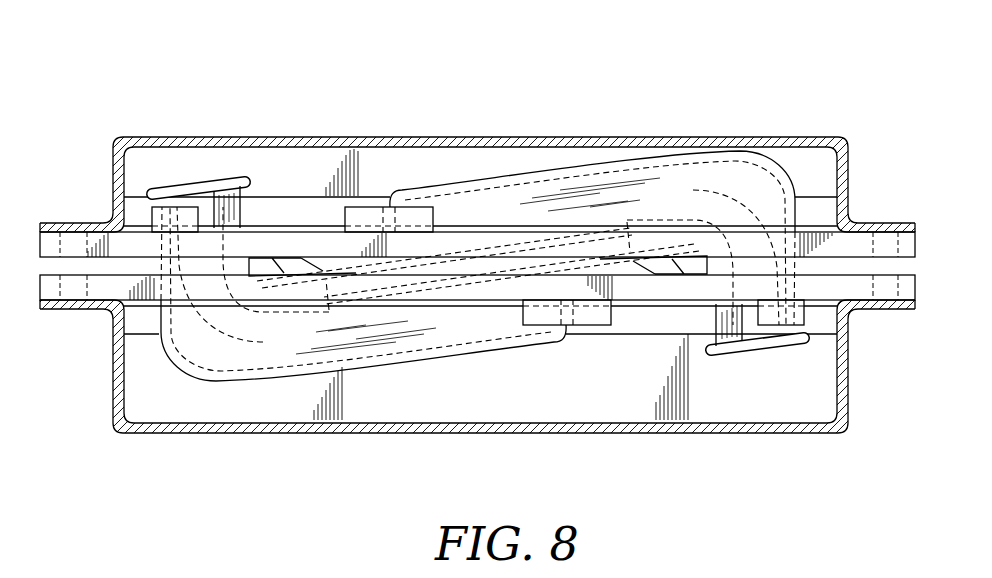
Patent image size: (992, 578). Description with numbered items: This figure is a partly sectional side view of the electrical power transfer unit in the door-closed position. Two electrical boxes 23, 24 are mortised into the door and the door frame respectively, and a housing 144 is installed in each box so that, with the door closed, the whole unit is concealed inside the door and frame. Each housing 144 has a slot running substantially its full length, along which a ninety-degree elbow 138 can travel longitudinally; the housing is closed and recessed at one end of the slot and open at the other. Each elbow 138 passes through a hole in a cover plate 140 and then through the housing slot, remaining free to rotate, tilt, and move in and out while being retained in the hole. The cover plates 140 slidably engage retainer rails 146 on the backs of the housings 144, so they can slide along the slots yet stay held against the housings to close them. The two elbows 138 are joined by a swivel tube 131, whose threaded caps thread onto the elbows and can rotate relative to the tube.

The electrical box 23 is at (672, 137).
The electrical box 24 is at (162, 428).
The swivel tube 131 is at (376, 330).
The 90° elbow 138 is at (192, 182).
The cover plate 140 is at (274, 226).
The housing 144 is at (538, 173).
The retainer rail 146 is at (152, 217).